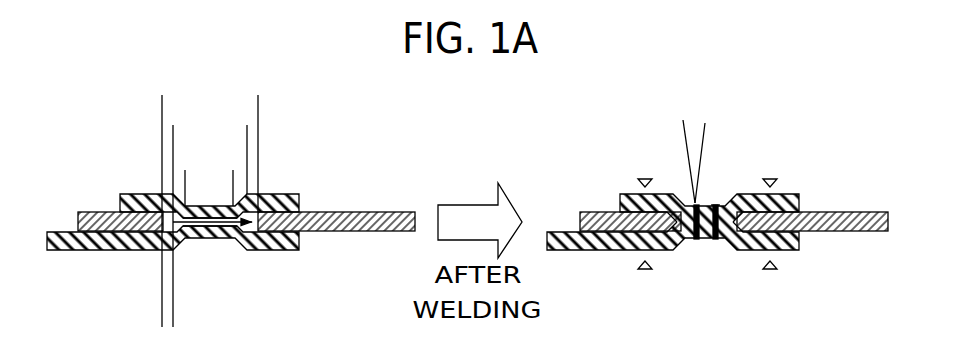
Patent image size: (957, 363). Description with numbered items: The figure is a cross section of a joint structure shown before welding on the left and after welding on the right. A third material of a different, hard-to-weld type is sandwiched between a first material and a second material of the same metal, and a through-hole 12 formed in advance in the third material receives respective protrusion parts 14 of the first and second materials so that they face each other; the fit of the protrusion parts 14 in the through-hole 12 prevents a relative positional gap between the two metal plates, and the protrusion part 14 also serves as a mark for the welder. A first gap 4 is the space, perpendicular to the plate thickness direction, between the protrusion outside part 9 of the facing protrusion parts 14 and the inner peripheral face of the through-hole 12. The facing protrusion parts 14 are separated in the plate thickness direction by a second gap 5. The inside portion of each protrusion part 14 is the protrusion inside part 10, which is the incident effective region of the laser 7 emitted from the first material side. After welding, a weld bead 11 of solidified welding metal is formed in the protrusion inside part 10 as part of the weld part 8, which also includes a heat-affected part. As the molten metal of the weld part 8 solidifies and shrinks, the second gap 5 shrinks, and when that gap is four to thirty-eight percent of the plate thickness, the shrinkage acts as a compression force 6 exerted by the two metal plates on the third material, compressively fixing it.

The first gap 4 is at (200, 315).
The second gap 5 is at (252, 217).
The compression force 6 is at (644, 179).
The laser 7 is at (705, 123).
The weld part 8 is at (712, 202).
The protrusion outside part 9 is at (173, 132).
The protrusion inside part 10 is at (185, 178).
The weld bead 11 is at (716, 240).
The through-hole 12 is at (162, 102).
The protrusion part 14 is at (205, 220).